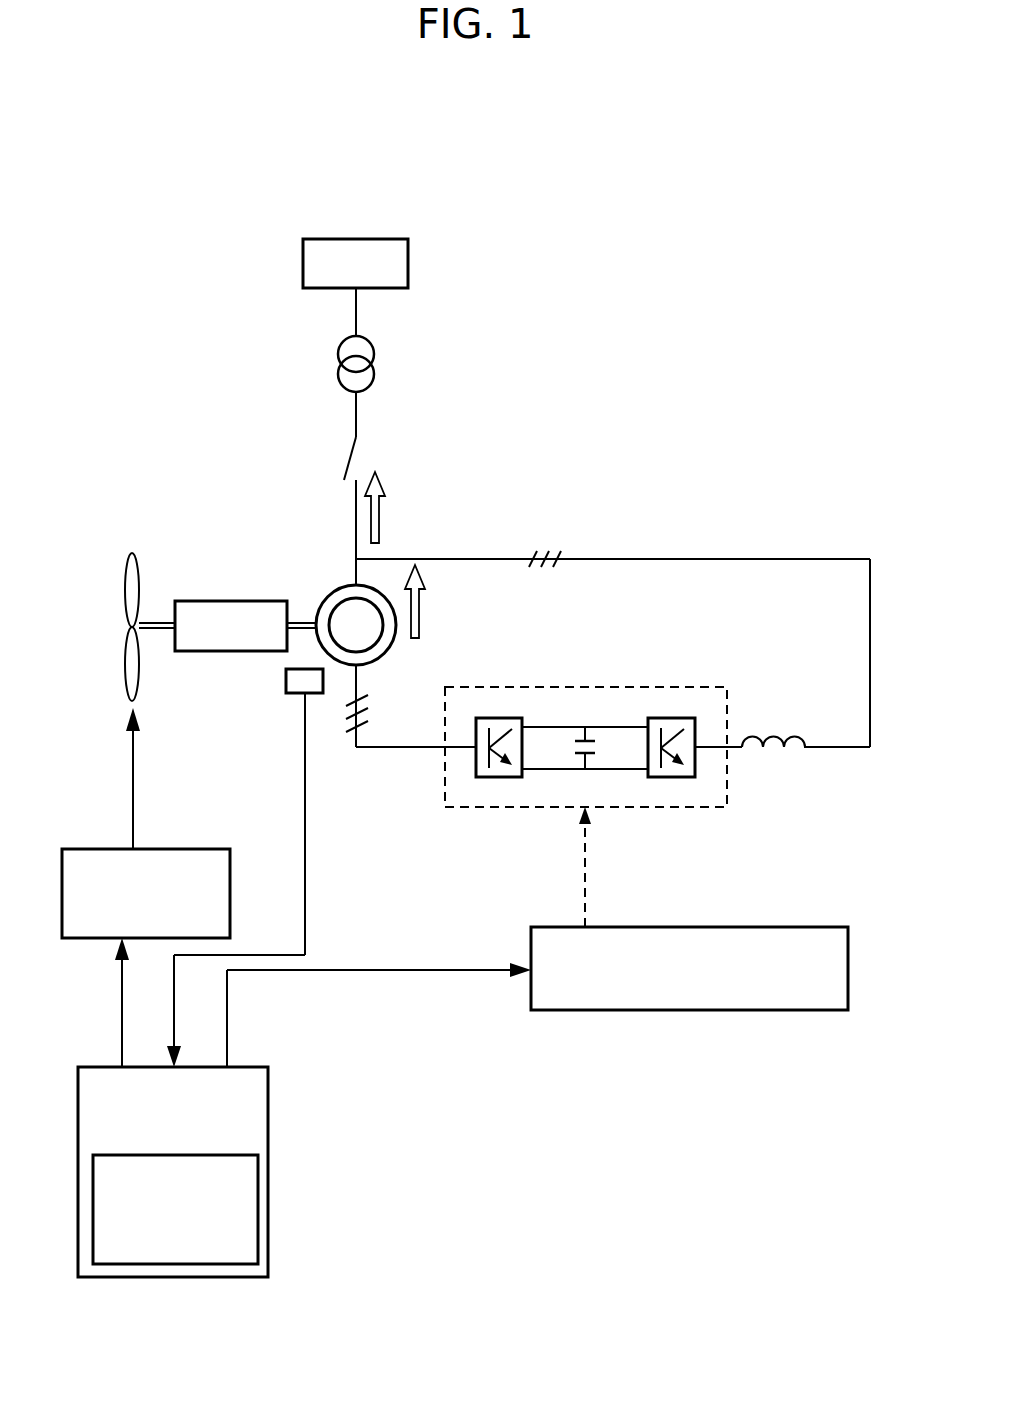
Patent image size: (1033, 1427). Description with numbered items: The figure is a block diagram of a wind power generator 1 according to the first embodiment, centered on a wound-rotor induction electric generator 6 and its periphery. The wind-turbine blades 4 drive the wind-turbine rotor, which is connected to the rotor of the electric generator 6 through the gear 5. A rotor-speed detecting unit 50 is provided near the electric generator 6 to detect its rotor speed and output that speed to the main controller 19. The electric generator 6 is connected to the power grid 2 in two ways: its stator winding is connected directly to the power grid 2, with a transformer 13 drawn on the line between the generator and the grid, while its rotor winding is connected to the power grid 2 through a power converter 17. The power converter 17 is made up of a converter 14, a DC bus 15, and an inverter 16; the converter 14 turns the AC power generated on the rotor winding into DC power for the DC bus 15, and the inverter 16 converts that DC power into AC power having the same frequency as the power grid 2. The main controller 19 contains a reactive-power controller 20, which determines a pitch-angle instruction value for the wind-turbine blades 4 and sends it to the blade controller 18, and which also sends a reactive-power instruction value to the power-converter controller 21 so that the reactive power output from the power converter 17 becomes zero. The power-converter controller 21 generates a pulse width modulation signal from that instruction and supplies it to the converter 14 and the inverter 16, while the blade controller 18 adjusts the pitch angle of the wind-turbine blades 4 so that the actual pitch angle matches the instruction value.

The wind power generator 1 is at (606, 192).
The power grid 2 is at (408, 266).
The wind-turbine blades 4 is at (132, 553).
The gear 5 is at (248, 601).
The electric generator 6 is at (332, 597).
The transformer 13 is at (356, 310).
The converter 14 is at (500, 777).
The DC bus 15 is at (627, 770).
The inverter 16 is at (697, 770).
The power converter 17 is at (613, 733).
The blade controller 18 is at (180, 849).
The main controller 19 is at (227, 1172).
The reactive-power controller 20 is at (258, 1197).
The power-converter controller 21 is at (848, 968).
The rotor-speed detecting unit 50 is at (286, 683).